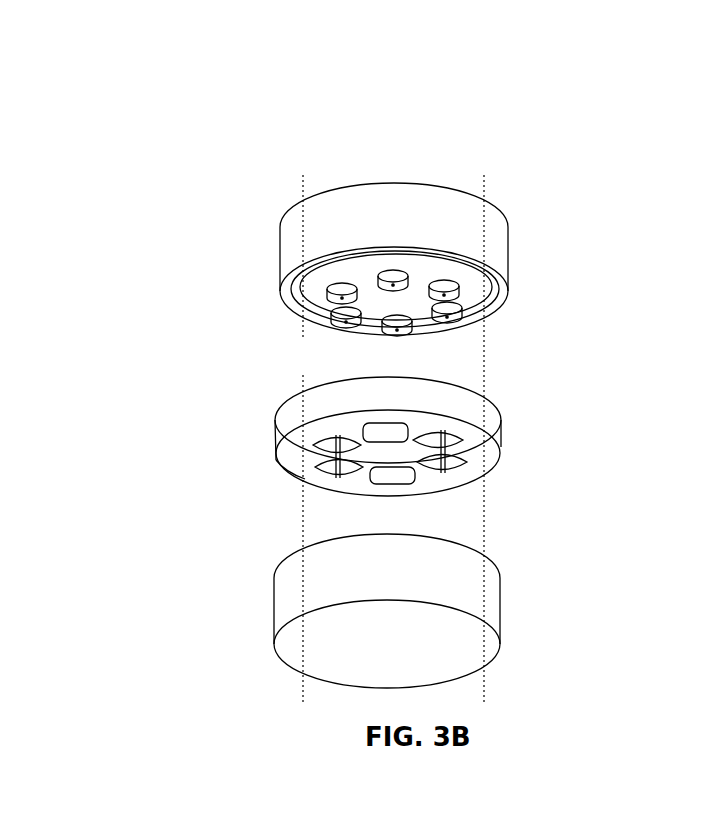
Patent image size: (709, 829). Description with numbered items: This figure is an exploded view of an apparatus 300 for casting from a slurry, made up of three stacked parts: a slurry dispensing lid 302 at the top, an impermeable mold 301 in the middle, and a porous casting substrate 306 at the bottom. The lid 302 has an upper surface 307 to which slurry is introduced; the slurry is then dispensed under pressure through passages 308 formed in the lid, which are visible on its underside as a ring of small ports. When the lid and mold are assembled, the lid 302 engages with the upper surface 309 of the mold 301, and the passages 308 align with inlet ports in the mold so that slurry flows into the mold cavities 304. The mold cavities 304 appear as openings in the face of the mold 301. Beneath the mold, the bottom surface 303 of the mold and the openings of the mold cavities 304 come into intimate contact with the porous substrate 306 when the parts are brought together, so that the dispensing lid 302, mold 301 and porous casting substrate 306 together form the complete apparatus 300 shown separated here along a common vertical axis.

The apparatus 300 is at (235, 128).
The mold 301 is at (501, 393).
The slurry dispensing lid 302 is at (508, 237).
The bottom surface 303 is at (448, 496).
The mold cavities 304 is at (276, 461).
The porous casting substrate 306 is at (498, 617).
The upper surface 307 is at (413, 182).
The passages 308 is at (323, 243).
The upper surface 309 is at (300, 357).